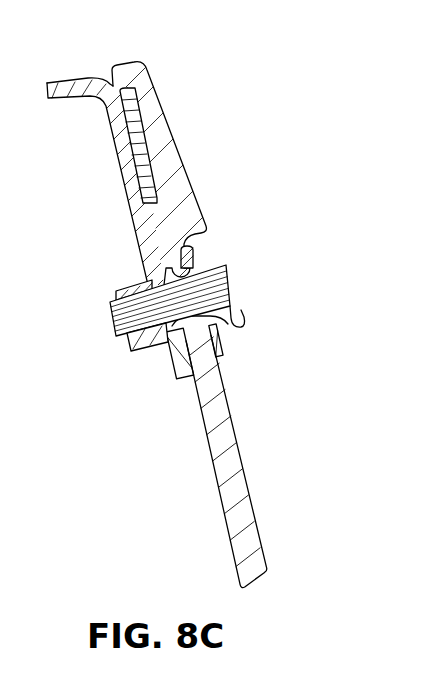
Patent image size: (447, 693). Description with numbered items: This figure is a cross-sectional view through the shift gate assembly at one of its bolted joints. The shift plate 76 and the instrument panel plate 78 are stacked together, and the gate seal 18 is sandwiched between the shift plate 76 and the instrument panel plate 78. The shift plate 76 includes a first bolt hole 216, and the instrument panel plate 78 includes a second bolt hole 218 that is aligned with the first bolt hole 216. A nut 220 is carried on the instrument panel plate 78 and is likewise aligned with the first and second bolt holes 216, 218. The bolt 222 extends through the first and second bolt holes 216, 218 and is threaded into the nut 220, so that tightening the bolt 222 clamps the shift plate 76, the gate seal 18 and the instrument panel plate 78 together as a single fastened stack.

The gate seal 18 is at (133, 150).
The shift plate 76 is at (178, 141).
The instrument panel plate 78 is at (130, 206).
The first bolt hole 216 is at (201, 264).
The second bolt hole 218 is at (245, 327).
The nut 220 is at (137, 347).
The bolt 222 is at (229, 296).